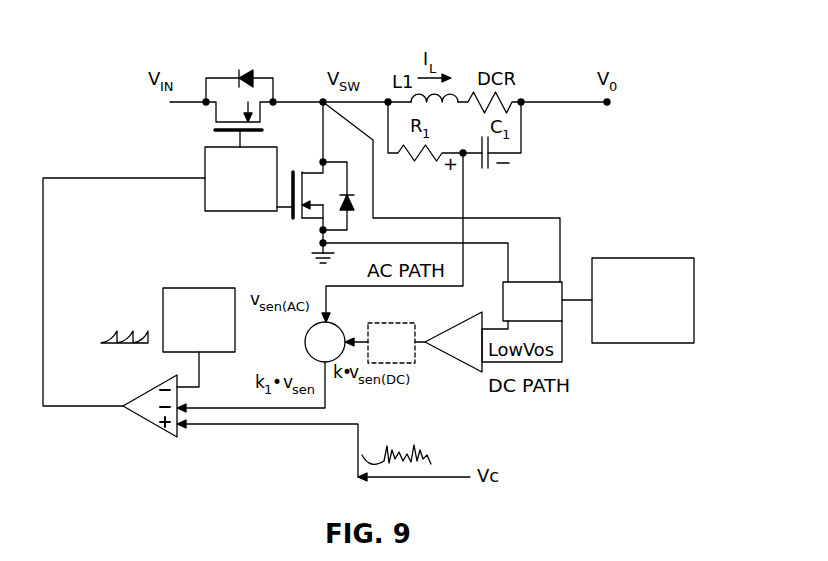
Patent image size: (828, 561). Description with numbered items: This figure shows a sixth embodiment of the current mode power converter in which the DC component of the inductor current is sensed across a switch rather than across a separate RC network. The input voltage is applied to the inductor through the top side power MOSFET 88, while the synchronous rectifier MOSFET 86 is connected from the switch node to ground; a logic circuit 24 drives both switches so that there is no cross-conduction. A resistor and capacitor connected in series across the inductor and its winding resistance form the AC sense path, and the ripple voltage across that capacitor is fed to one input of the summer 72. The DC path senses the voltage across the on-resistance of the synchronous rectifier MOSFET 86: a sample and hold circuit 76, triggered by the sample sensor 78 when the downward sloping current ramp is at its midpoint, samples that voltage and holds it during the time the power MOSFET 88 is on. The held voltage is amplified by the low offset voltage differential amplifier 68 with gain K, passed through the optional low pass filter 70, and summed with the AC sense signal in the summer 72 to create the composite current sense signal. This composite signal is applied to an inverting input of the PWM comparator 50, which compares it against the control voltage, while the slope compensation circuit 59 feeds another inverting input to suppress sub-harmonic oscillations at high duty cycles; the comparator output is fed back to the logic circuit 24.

The power MOSFET 88 is at (216, 118).
The logic circuit 24 is at (216, 212).
The synchronous rectifier MOSFET 86 is at (307, 219).
The slope compensation circuit 59 is at (163, 312).
The summer 72 is at (305, 344).
The low pass filter 70 is at (404, 322).
The sample and hold circuit 76 is at (503, 303).
The differential amplifier 68 is at (462, 366).
The PWM comparator 50 is at (155, 425).
The sample sensor 78 is at (662, 343).